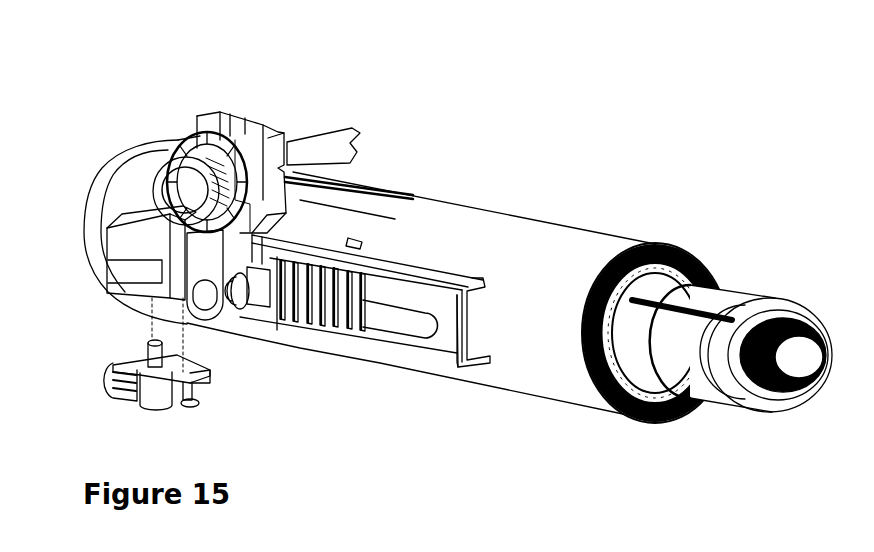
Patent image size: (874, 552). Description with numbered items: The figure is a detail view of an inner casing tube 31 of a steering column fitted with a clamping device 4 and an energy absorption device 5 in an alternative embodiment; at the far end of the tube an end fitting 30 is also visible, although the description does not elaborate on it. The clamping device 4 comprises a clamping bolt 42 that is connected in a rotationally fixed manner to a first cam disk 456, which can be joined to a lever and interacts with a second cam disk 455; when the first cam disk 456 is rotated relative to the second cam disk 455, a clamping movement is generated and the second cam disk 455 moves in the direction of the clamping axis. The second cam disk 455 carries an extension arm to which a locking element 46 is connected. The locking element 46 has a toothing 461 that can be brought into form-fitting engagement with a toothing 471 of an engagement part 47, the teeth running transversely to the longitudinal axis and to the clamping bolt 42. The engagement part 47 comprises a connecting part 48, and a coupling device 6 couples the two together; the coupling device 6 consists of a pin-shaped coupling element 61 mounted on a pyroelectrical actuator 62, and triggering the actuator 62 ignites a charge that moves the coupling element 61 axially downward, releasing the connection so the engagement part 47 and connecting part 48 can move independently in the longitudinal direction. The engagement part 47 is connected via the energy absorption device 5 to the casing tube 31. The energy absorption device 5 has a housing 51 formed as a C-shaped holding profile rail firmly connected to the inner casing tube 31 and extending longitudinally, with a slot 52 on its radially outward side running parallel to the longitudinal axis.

The clamping device 4 is at (172, 120).
The second cam disk 455 is at (224, 113).
The clamping bolt 42 is at (313, 150).
The first cam disk 456 is at (353, 160).
The toothing 461 is at (337, 247).
The toothing 471 is at (357, 245).
The energy absorption device 5 is at (386, 298).
The inner casing tube 31 is at (557, 270).
The end boss 30 is at (730, 300).
The connecting part 48 is at (133, 276).
The coupling element 61 is at (147, 352).
The pyroelectrical actuator 62 is at (157, 408).
The coupling device 6 is at (198, 420).
The locking element 46 is at (260, 288).
The engagement part 47 is at (318, 313).
The slot 52 is at (413, 325).
The housing 51 is at (447, 328).